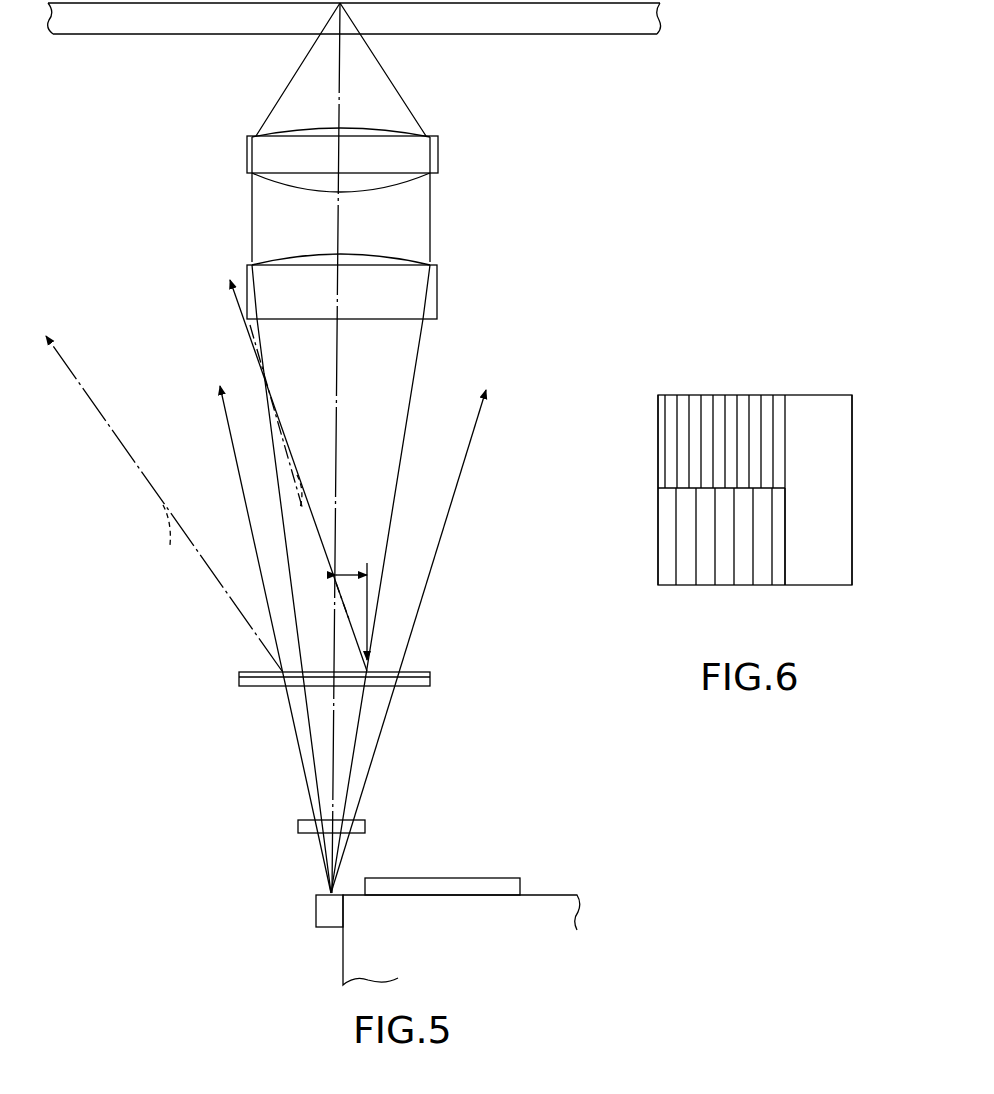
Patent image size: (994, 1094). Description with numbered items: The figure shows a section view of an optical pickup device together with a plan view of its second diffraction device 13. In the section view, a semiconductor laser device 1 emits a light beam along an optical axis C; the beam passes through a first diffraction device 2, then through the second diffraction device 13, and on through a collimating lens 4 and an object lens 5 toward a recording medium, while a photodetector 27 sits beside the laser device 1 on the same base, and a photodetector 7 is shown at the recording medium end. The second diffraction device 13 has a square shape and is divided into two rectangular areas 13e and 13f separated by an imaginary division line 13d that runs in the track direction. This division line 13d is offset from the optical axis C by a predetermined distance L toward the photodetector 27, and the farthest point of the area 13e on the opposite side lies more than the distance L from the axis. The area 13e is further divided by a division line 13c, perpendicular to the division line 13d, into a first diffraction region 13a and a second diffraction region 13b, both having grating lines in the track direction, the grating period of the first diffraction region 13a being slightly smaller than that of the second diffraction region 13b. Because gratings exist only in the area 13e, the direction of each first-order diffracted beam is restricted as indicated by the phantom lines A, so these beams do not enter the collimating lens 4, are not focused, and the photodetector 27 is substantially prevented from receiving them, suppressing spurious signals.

In FIG. 5, the semiconductor laser device 1 is at (316, 904).
In FIG. 5, the first diffraction device 2 is at (298, 826).
In FIG. 5, the collimating lens 4 is at (437, 300).
In FIG. 5, the object lens 5 is at (247, 153).
In FIG. 5, the photodetector 7 is at (92, 27).
In FIG. 5, the second diffraction device 13 is at (430, 680).
In FIG. 6, the second diffraction device 13 is at (836, 371).
In FIG. 6, the first diffraction region 13a is at (777, 462).
In FIG. 6, the second diffraction region 13b is at (772, 518).
In FIG. 6, the division line 13c is at (780, 486).
In FIG. 6, the division line 13d is at (783, 558).
In FIG. 6, the rectangular area 13e is at (657, 545).
In FIG. 6, the rectangular area 13f is at (843, 573).
In FIG. 5, the photodetector 27 is at (507, 888).
In FIG. 5, the phantom lines A is at (235, 525).
In FIG. 5, the optical axis C is at (339, 487).
In FIG. 5, the predetermined distance L is at (351, 601).